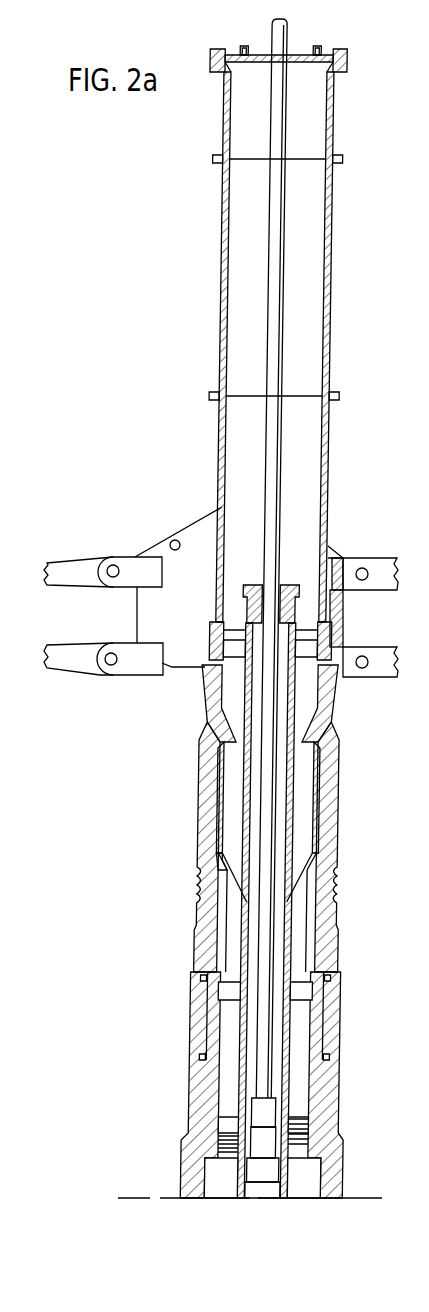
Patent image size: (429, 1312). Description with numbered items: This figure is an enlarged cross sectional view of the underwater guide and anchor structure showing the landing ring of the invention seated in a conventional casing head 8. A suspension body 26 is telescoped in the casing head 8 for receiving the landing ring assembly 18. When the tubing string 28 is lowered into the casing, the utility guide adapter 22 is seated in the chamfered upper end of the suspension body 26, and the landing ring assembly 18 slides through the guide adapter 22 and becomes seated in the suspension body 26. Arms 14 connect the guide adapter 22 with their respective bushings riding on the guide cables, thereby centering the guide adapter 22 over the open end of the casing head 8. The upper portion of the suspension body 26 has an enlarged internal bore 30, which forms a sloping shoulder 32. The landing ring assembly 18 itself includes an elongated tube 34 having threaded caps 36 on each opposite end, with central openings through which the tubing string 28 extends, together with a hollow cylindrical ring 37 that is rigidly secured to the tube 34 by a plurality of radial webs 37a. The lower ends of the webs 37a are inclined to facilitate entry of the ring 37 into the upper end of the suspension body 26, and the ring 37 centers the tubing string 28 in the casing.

The casing head 8 is at (330, 1092).
The arms 14 is at (94, 553).
The landing ring assembly 18 is at (296, 925).
The utility guide adapter 22 is at (222, 338).
The suspension body 26 is at (330, 835).
The tubing string 28 is at (278, 143).
The enlarged internal bore 30 is at (218, 818).
The sloping shoulder 32 is at (217, 853).
The elongated tube 34 is at (245, 936).
The threaded caps 36 is at (293, 585).
The hollow cylindrical ring 37 is at (309, 800).
The radial webs 37a is at (235, 793).